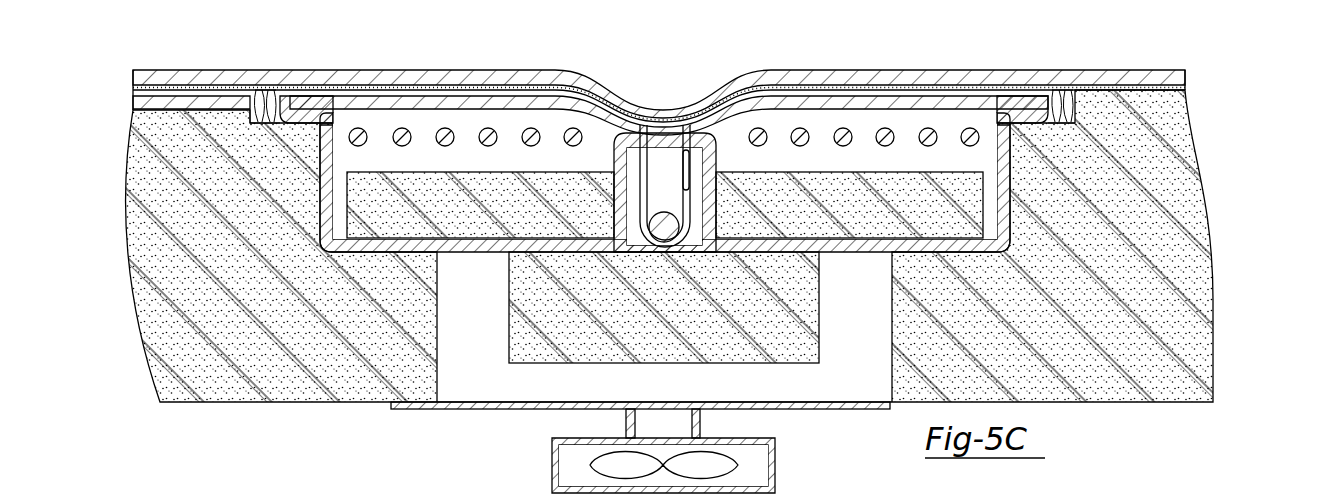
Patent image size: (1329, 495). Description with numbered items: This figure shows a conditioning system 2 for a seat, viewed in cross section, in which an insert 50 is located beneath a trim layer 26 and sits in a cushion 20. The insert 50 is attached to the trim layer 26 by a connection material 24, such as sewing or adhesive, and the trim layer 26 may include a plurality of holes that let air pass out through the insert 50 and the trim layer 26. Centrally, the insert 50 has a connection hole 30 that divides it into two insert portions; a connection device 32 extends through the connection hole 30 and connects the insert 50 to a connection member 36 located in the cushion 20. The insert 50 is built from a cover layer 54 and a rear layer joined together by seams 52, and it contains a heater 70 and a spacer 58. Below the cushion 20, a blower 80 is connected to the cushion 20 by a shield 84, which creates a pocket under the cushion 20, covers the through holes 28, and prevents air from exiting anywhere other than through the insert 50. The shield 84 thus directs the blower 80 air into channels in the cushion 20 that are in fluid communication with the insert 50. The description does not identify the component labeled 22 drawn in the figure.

The conditioning system 2 is at (1148, 57).
The cushion 20 is at (1170, 230).
The vehicle body panel 22 is at (1176, 190).
The connection material 24 is at (817, 96).
The trim layer 26 is at (305, 85).
The through holes 28 is at (850, 366).
The connection hole 30 is at (716, 60).
The connection device 32 is at (655, 108).
The connection member 36 is at (655, 212).
The insert 50 is at (262, 105).
The seams 52 is at (1058, 108).
The cover layer 54 is at (977, 108).
The spacer 58 is at (375, 218).
The heater 70 is at (485, 128).
The blower 80 is at (553, 470).
The shield 84 is at (443, 410).